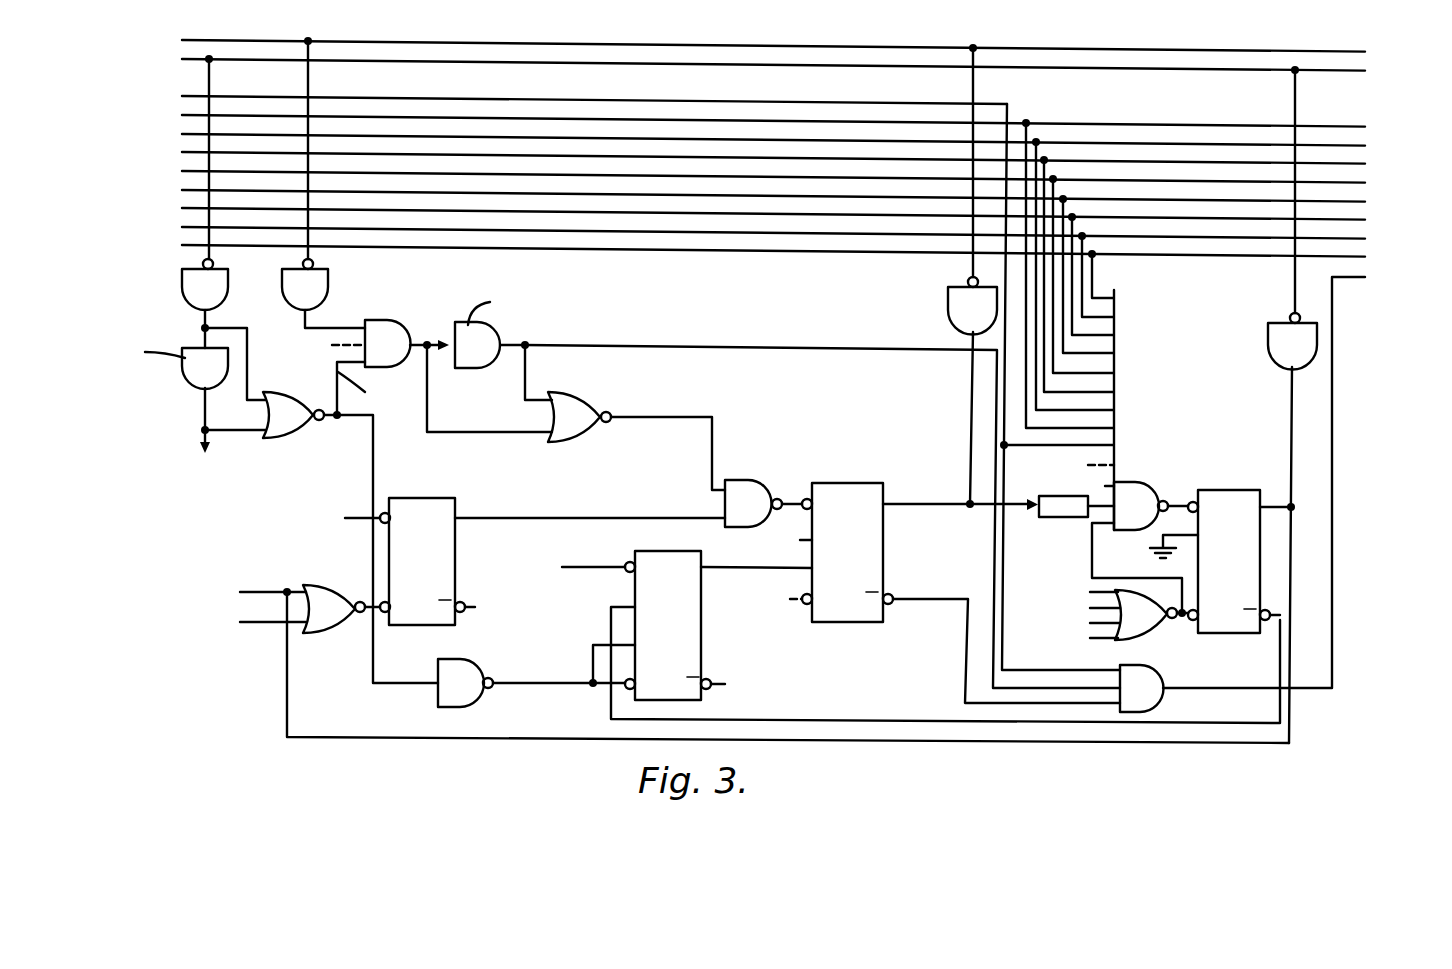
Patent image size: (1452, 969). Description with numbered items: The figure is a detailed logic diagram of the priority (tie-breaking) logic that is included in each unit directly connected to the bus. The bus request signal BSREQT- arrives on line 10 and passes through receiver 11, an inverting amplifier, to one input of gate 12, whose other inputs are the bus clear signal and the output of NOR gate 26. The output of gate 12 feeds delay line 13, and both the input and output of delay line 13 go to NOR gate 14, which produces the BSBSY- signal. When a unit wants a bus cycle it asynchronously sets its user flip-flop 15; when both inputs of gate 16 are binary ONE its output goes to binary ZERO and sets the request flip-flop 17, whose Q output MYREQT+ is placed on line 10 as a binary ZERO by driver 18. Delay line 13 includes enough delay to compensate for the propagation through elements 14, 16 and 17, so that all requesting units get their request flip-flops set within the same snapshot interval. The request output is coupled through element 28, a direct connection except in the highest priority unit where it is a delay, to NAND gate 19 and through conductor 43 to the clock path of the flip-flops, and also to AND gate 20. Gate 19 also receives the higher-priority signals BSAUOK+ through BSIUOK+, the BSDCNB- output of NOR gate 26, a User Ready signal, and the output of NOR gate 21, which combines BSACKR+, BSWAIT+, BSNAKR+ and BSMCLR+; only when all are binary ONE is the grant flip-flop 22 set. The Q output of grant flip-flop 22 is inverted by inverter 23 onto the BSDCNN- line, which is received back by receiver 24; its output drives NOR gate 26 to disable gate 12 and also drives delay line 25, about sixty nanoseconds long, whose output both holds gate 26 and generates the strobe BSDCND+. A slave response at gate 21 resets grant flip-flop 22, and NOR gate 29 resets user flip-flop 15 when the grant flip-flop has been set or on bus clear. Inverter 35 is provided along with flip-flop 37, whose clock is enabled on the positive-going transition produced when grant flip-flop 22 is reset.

The line 10 is at (362, 52).
The receiver 11 is at (328, 280).
The gate 12 is at (385, 367).
The delay line 13 is at (476, 367).
The NOR gate 14 is at (560, 392).
The user flip-flop 15 is at (442, 497).
The gate 16 is at (752, 481).
The request flip-flop 17 is at (840, 485).
The driver 18 is at (950, 322).
The NAND gate 19 is at (1134, 486).
The AND gate 20 is at (1160, 686).
The NOR gate 21 is at (1155, 628).
The grant flip-flop 22 is at (1213, 490).
The inverter 23 is at (1275, 336).
The receiver 24 is at (228, 280).
The delay line 25 is at (192, 388).
The NOR gate 26 is at (300, 392).
The element 28 is at (1058, 518).
The NOR gate 29 is at (318, 586).
The inverter 35 is at (462, 660).
The flip-flop 37 is at (662, 553).
The clock signal line 43 is at (742, 568).